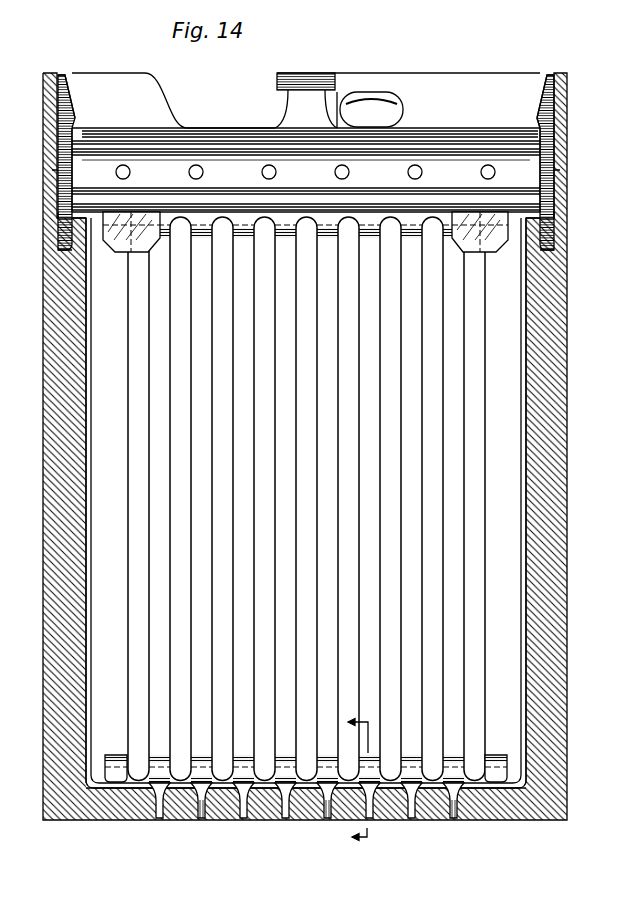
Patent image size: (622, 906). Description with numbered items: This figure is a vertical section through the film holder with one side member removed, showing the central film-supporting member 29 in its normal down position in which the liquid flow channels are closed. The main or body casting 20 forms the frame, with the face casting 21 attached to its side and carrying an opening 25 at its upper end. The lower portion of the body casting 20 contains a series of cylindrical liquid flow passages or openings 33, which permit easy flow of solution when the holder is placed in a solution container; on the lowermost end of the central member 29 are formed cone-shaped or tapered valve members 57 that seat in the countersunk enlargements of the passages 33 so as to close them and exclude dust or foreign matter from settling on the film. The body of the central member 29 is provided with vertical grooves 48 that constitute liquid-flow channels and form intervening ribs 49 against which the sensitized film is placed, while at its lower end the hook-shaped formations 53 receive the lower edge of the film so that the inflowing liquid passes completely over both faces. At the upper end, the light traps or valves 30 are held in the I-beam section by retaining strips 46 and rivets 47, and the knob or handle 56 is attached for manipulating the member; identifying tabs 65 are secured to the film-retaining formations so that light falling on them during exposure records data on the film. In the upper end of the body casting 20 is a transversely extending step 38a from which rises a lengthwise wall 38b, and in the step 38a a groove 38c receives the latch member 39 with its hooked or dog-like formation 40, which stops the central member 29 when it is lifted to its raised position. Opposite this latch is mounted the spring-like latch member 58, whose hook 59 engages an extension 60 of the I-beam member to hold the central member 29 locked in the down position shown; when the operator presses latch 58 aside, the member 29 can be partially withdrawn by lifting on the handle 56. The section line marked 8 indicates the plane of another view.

The section line 8- 8 is at (361, 775).
The main or body casting 20 is at (57, 402).
The face casting 21 is at (450, 88).
The opening 25 is at (390, 113).
The central film-supporting member 29 is at (96, 503).
The light trap or valve 30 is at (97, 145).
The liquid flow passage or opening 33 is at (158, 806).
The step 38a is at (58, 214).
The wall 38b is at (566, 178).
The groove or slot 38c is at (66, 249).
The latch member 39 is at (64, 187).
The hooked or dog-like formation 40 is at (68, 124).
The retaining strip 46 is at (122, 158).
The rivet 47 is at (435, 175).
The groove 48 is at (134, 340).
The rib 49 is at (156, 393).
The hook-shaped formation 53 is at (118, 755).
The knob or handle 56 is at (307, 97).
The cone-shaped or tapered valve member 57 is at (201, 806).
The spring-like latch member 58 is at (549, 166).
The hook 59 is at (548, 110).
The extension 60 is at (538, 132).
The identifying tab 65 is at (123, 243).